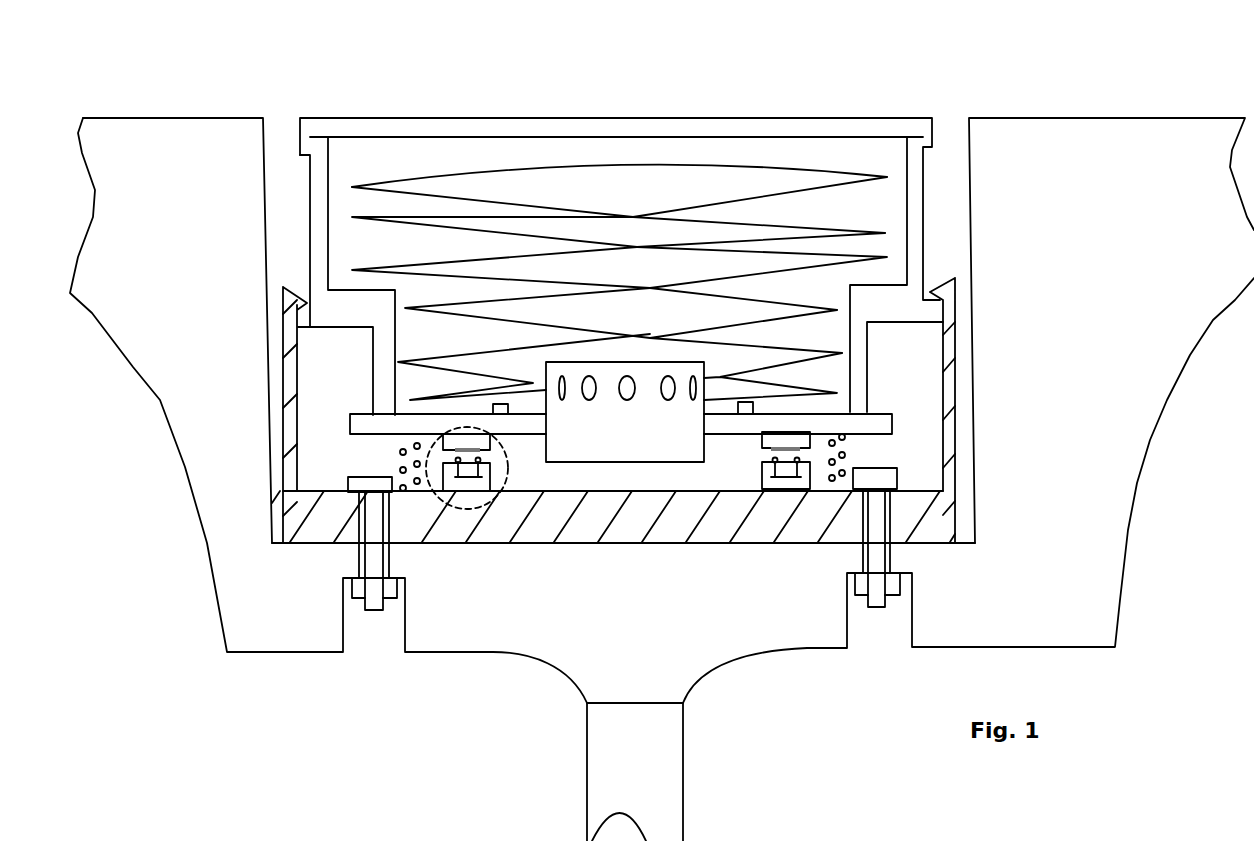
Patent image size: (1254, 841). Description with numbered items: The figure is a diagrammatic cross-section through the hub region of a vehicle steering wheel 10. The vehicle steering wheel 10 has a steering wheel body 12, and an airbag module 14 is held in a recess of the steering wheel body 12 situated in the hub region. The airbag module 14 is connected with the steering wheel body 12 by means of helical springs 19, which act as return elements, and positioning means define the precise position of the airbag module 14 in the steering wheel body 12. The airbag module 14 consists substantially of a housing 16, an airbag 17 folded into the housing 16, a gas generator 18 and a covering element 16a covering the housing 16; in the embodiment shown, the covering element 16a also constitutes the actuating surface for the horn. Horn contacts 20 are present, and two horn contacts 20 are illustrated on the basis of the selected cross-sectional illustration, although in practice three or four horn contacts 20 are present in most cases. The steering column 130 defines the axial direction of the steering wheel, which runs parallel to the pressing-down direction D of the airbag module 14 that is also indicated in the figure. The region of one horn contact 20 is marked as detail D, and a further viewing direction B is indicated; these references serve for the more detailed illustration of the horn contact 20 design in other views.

The vehicle steering wheel 10 is at (1147, 577).
The steering wheel body 12 is at (1130, 415).
The airbag module 14 is at (587, 150).
The housing 16 is at (383, 386).
The covering element 16a is at (803, 125).
The airbag 17 is at (730, 200).
The gas generator 18 is at (668, 435).
The helical springs 19 is at (417, 473).
The horn contacts 20 is at (473, 443).
The steering column 130 is at (595, 803).
The direction B is at (642, 72).
The pressing-down direction D / detail D is at (508, 477).